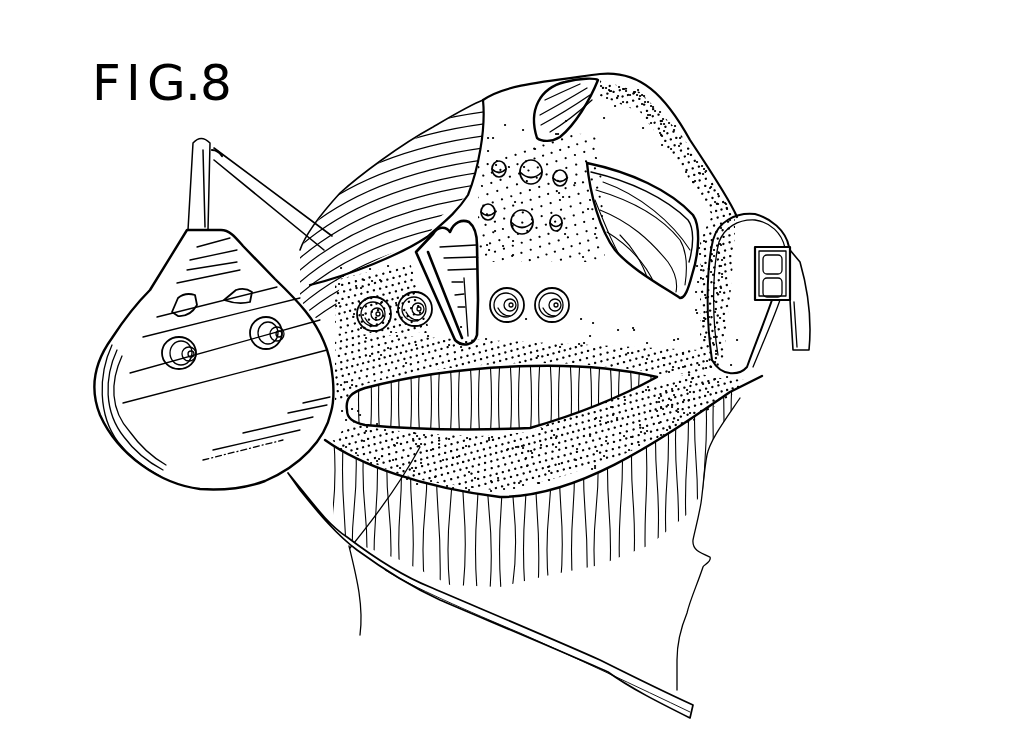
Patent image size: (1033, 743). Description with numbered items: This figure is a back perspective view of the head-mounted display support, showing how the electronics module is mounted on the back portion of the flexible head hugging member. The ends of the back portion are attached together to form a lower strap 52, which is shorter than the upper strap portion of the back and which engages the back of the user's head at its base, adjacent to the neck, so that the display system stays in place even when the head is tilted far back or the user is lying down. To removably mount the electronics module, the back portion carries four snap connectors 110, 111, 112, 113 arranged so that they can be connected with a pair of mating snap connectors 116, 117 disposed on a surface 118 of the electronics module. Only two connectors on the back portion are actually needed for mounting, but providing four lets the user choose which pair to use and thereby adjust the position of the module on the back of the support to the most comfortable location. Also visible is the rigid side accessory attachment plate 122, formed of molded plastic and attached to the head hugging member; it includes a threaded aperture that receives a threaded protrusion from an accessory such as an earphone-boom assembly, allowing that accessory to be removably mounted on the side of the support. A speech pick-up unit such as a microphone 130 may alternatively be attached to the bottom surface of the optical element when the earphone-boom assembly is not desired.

The lower strap 52 is at (350, 548).
The snap connector 110 is at (368, 297).
The snap connector 111 is at (409, 292).
The snap connector 112 is at (512, 321).
The snap connector 113 is at (568, 311).
The mating snap connector 116 is at (187, 370).
The mating snap connector 117 is at (277, 362).
The surface of the electronics module 118 is at (235, 445).
The side accessory attachment plate 122 is at (745, 255).
The microphone 130 is at (690, 702).